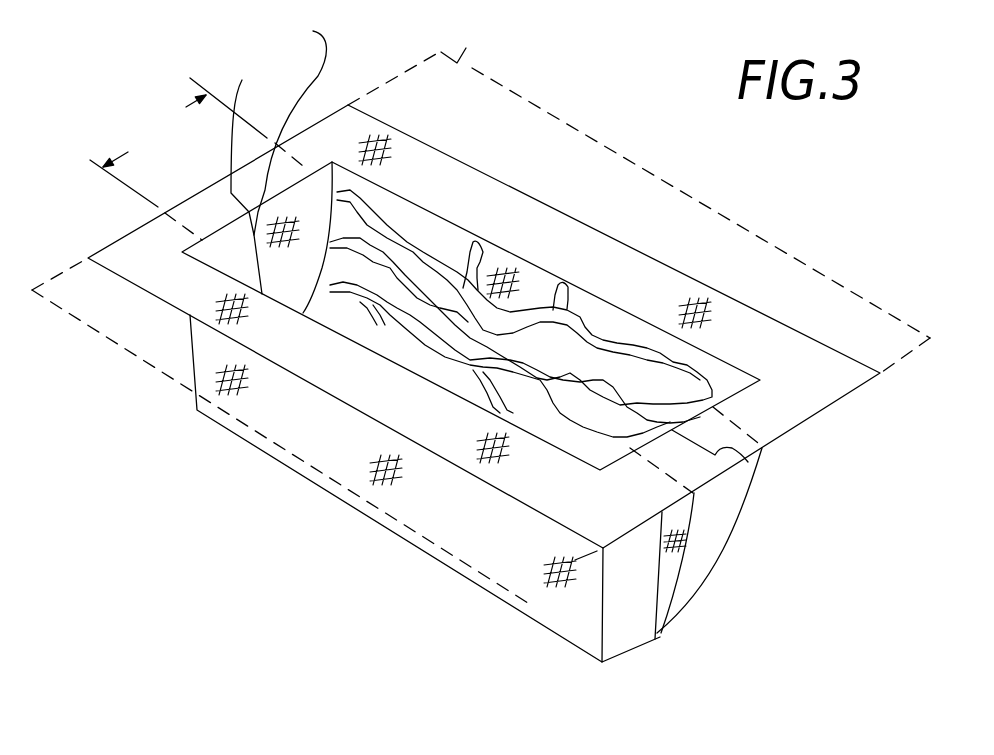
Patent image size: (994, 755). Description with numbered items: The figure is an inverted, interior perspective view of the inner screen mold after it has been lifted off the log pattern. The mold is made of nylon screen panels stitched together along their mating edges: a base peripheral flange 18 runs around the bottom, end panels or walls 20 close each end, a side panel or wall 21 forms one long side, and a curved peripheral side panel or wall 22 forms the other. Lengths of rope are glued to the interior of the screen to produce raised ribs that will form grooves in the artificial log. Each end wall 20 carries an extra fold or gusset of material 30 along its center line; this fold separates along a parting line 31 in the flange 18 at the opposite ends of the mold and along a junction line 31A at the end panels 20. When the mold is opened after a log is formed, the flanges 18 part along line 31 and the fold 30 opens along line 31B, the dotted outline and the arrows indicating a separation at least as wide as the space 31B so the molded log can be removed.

The base peripheral flange 18 is at (466, 46).
The end panels or walls 20 is at (316, 197).
The side panel or wall 21 is at (543, 605).
The curved peripheral side panel or wall 22 is at (585, 330).
The fold or gusset of material 30 is at (672, 572).
The parting line 31 is at (815, 466).
The junction line 31A is at (293, 164).
The space between the arrows 31B is at (178, 142).